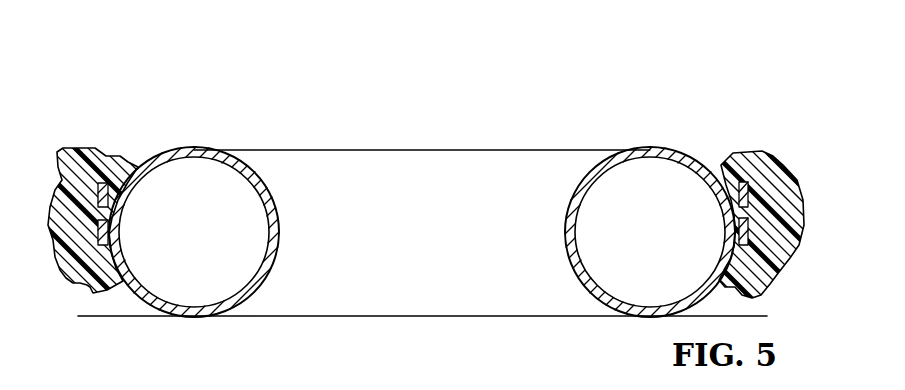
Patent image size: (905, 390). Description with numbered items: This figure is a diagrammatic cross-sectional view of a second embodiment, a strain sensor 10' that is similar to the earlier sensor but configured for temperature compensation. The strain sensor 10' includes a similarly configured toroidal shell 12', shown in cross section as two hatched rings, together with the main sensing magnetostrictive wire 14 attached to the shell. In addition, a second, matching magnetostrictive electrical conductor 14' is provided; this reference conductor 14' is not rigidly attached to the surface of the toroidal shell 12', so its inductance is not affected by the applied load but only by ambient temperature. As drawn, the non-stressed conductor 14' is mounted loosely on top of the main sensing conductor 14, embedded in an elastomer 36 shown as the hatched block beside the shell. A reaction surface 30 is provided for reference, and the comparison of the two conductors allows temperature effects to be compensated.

The strain sensor 10' is at (452, 184).
The toroidal shell 12' is at (422, 205).
The second magnetostrictive electrical conductor 14' is at (722, 161).
The magnetostrictive wire 14 is at (776, 271).
The reaction surface 30 is at (88, 316).
The elastomer 36 is at (785, 177).